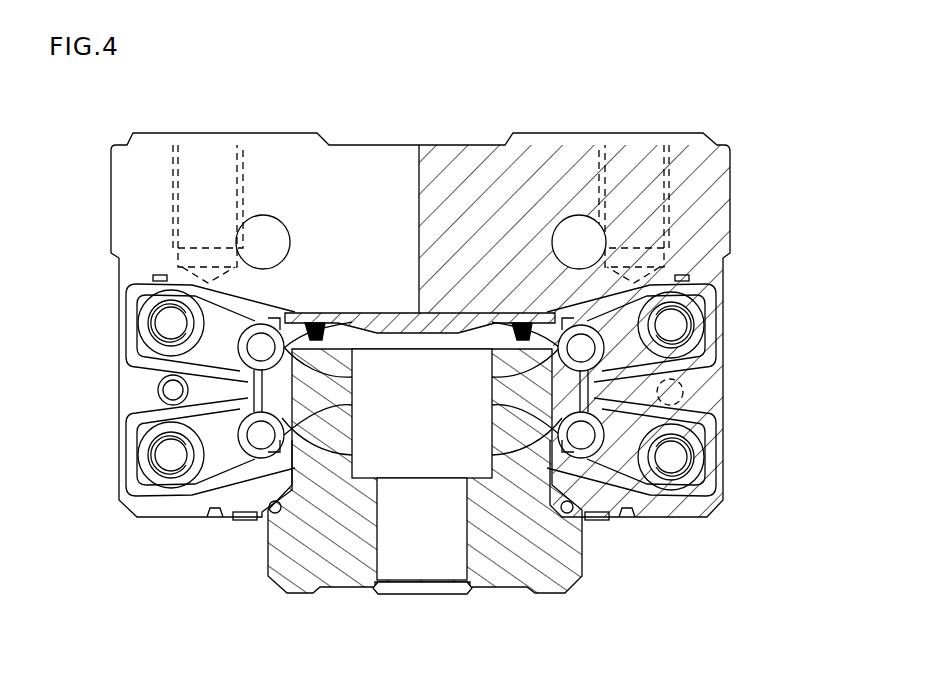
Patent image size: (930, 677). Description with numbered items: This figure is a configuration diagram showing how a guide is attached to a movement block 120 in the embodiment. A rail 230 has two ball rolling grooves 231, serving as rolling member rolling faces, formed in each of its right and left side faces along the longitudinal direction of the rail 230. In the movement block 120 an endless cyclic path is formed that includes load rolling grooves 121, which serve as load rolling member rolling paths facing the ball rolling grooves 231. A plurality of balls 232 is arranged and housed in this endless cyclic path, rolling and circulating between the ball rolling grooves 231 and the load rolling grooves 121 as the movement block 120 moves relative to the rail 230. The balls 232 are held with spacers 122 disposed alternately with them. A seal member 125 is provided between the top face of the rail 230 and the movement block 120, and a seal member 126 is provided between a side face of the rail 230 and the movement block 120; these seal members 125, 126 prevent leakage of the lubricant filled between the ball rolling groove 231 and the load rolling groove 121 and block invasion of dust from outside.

The movement block 120 is at (390, 168).
The load rolling groove 121 is at (193, 297).
The spacer 122 is at (170, 325).
The seal member 125 is at (365, 312).
The seal member 126 is at (242, 518).
The rail 230 is at (512, 565).
The ball rolling groove 231 is at (300, 355).
The ball 232 is at (297, 437).